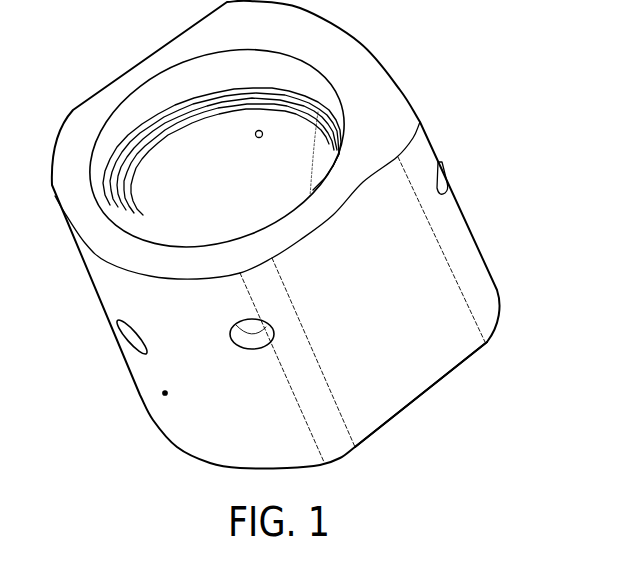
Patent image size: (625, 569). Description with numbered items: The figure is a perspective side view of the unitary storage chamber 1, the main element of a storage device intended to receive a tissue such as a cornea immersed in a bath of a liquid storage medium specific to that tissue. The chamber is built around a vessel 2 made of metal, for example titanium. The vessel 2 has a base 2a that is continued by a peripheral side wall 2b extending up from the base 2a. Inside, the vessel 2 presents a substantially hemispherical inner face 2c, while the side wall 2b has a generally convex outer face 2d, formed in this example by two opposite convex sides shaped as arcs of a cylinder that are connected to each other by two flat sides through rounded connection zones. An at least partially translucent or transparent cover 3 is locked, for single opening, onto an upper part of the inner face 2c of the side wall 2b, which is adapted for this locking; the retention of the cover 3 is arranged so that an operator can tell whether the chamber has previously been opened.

The unitary storage chamber 1 is at (283, 264).
The vessel 2 is at (283, 235).
The base 2a is at (427, 393).
The peripheral side wall 2b is at (91, 280).
The inner face 2c is at (240, 200).
The outer face 2d is at (360, 319).
The cover 3 is at (192, 146).